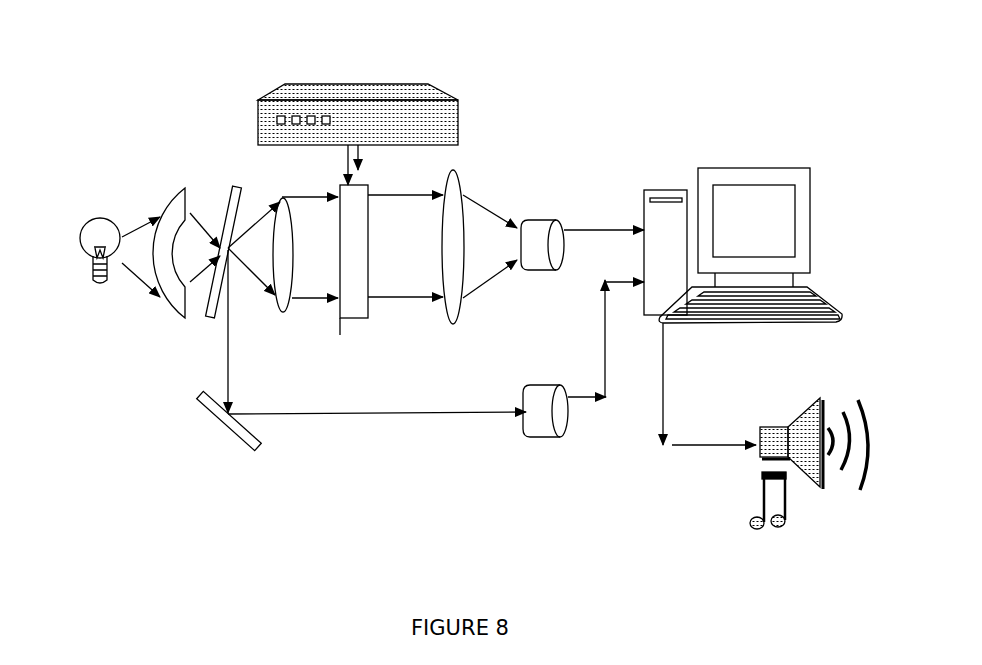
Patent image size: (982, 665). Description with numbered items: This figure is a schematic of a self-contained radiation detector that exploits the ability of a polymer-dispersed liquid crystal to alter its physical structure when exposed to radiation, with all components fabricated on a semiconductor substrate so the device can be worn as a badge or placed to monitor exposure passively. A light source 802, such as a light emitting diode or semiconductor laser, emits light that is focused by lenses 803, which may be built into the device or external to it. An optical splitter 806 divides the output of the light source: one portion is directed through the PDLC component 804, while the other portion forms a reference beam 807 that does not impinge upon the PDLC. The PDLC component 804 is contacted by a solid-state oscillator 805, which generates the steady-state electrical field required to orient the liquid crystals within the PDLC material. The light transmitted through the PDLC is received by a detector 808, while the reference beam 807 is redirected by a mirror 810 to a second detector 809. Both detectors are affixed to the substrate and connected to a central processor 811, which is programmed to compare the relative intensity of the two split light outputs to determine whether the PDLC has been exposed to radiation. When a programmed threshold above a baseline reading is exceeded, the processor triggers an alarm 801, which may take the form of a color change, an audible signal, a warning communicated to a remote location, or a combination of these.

The alarm 801 is at (809, 476).
The light source 802 is at (78, 234).
The lenses 803 is at (352, 220).
The PDLC component 804 is at (387, 276).
The solid-state oscillator 805 is at (358, 76).
The optical splitter 806 is at (156, 293).
The reference beam 807 is at (296, 275).
The detector 808 is at (574, 210).
The reference detector 809 is at (565, 444).
The mirror 810 is at (205, 458).
The central processor 811 is at (743, 212).